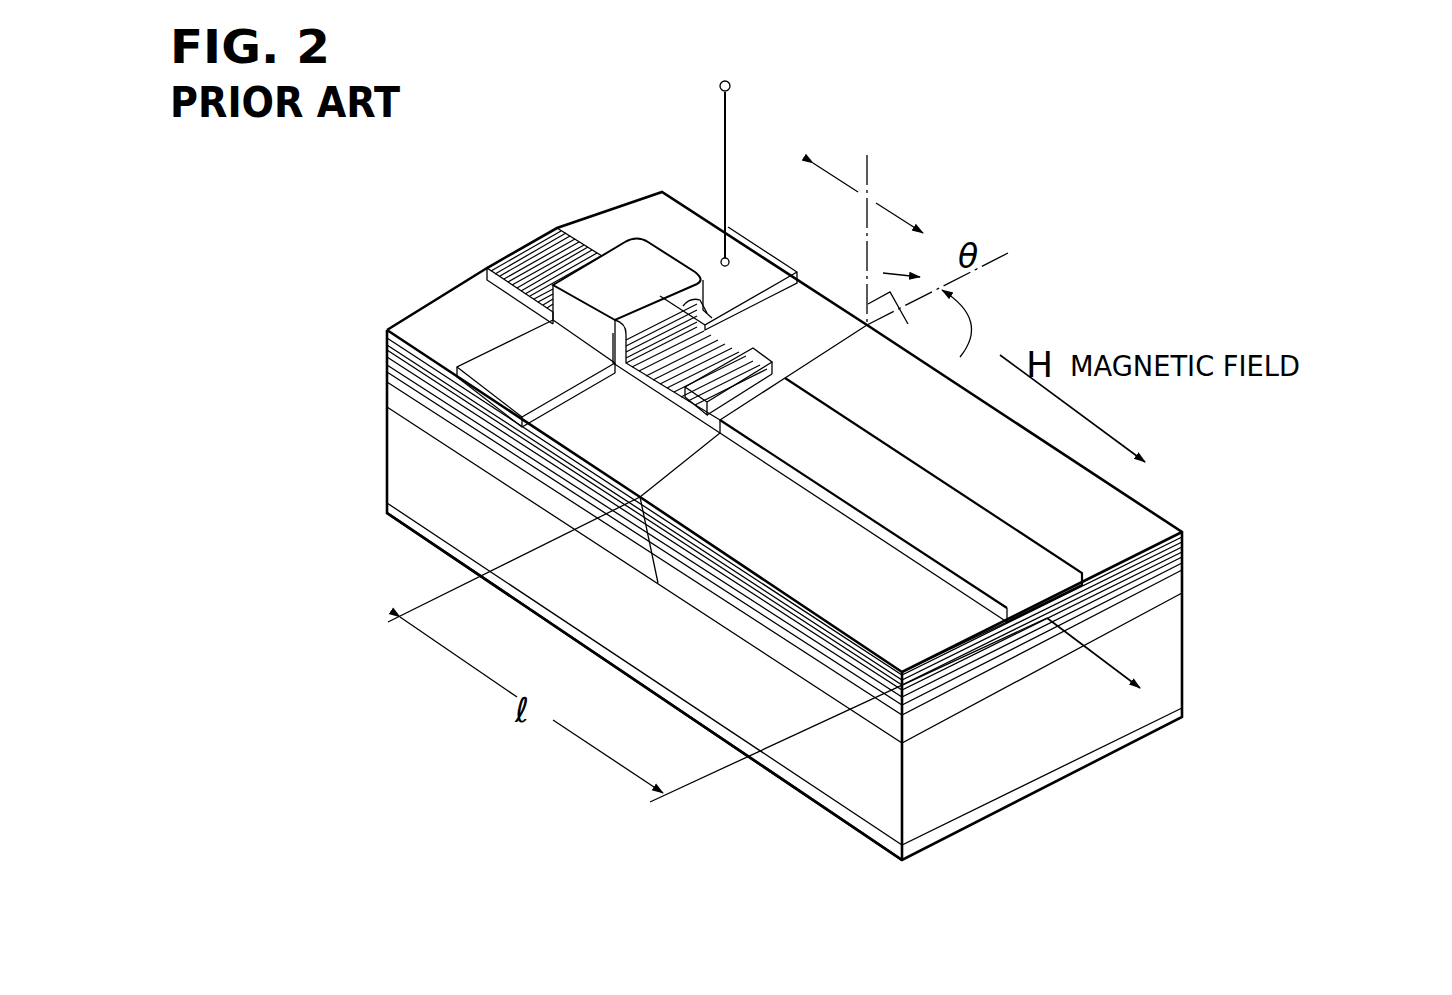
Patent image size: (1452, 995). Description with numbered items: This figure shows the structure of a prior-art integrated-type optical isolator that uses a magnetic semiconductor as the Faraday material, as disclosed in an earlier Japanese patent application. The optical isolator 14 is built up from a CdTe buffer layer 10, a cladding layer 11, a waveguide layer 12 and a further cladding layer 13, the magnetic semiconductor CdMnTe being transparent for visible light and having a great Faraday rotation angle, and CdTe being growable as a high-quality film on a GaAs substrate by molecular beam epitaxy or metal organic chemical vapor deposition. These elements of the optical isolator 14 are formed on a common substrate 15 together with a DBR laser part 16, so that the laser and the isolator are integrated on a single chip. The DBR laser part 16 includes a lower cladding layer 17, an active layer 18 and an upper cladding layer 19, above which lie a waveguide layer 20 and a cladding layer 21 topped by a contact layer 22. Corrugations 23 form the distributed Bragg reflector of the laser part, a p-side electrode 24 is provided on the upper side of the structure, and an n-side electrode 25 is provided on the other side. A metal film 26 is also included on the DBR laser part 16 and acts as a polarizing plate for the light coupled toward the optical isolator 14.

The CdTe buffer layer 10 is at (1175, 593).
The cladding layer 11 is at (1178, 568).
The waveguide layer 12 is at (1186, 551).
The cladding layer 13 is at (1186, 537).
The optical isolator 14 is at (1105, 296).
The common substrate 15 is at (395, 458).
The DBR laser part 16 is at (695, 183).
The lower cladding layer 17 is at (387, 397).
The active layer 18 is at (387, 383).
The upper cladding layer 19 is at (387, 373).
The waveguide layer 20 is at (387, 365).
The cladding layer 21 is at (387, 337).
The contact layer 22 is at (712, 292).
The corrugations 23 is at (525, 262).
The p-side electrode 24 is at (615, 258).
The n-side electrode 25 is at (448, 552).
The metal film 26 is at (760, 360).